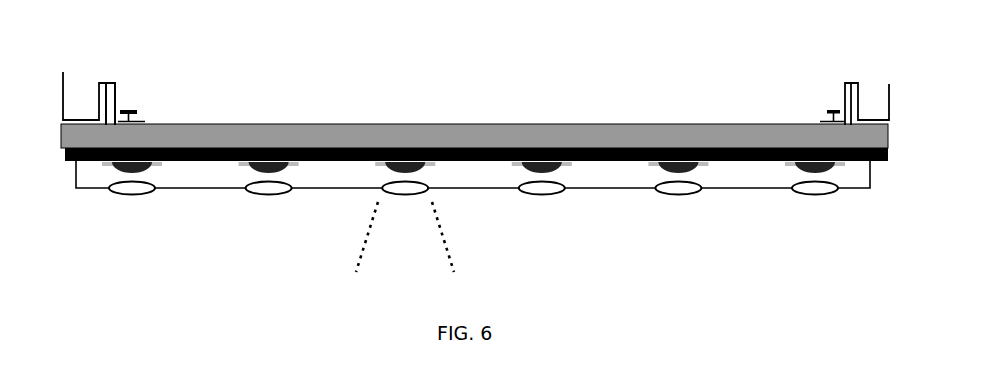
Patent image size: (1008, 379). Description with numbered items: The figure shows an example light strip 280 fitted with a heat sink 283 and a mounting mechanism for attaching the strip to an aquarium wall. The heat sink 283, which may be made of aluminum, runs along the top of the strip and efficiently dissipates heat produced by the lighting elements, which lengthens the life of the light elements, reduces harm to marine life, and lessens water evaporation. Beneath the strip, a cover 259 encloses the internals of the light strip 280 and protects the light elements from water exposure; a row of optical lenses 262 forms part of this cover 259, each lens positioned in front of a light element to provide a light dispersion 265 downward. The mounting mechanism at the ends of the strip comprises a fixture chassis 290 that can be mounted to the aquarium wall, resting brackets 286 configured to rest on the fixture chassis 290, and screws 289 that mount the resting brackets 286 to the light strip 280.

The light strip 280 is at (482, 56).
The heat sink 283 is at (467, 125).
The resting brackets 286 is at (115, 100).
The screws 289 is at (138, 112).
The fixture chassis 290 is at (63, 72).
The cover 259 is at (80, 189).
The optical lens 262 is at (131, 194).
The light dispersion 265 is at (362, 251).